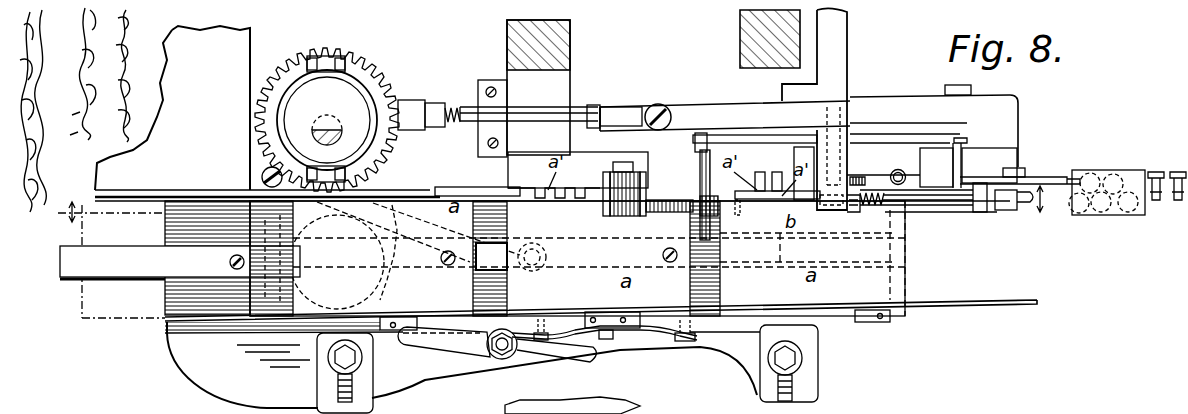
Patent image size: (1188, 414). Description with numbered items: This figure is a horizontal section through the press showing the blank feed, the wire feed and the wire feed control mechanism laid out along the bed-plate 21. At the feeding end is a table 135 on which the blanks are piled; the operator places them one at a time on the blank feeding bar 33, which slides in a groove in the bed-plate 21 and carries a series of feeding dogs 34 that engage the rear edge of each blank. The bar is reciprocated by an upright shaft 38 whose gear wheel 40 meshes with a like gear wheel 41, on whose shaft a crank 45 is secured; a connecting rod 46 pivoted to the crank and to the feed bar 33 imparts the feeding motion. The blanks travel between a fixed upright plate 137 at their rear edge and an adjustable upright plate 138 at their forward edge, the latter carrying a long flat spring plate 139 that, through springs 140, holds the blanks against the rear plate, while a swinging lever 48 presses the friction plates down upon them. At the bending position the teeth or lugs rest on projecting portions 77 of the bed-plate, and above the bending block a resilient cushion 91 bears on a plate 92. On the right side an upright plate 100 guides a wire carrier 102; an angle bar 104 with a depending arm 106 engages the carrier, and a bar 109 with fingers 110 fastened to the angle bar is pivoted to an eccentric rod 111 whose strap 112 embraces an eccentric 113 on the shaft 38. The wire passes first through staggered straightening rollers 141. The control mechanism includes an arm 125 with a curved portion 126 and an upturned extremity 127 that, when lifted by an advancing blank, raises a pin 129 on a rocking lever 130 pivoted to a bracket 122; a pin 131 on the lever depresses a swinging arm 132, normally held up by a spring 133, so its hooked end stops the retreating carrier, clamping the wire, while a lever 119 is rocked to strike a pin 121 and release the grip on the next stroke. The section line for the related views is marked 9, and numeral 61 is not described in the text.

The type bars / plate 9 is at (593, 244).
The bed-plate 21 is at (172, 360).
The blank feeding bar 33 is at (180, 258).
The feeding dogs 34 is at (284, 252).
The upright shaft 38 is at (338, 135).
The gear wheel 40 is at (286, 70).
The gear wheel 41 is at (387, 210).
The crank 45 is at (264, 175).
The connecting rod 46 is at (366, 257).
The swinging lever 48 is at (452, 345).
The part 61 is at (697, 407).
The projecting portions 77 is at (762, 172).
The resilient cushion 91 is at (618, 406).
The plate 92 is at (661, 402).
The upright plate 100 is at (1045, 172).
The carrier 102 is at (1024, 203).
The angle bar 104 is at (938, 162).
The arm 106 is at (892, 206).
The bar 109 is at (700, 112).
The fingers 110 is at (1018, 118).
The eccentric rod 111 is at (555, 112).
The strap 112 is at (345, 88).
The eccentric 113 is at (324, 97).
The lever 119 is at (1042, 207).
The pin 121 is at (1000, 210).
The bracket 122 is at (838, 85).
The arm 125 is at (618, 214).
The curved portion 126 is at (668, 213).
The extremity 127 is at (725, 205).
The pin 129 is at (700, 160).
The rocking lever 130 is at (770, 136).
The pin 131 is at (960, 167).
The swinging arm 132 is at (1022, 166).
The spring 133 is at (898, 168).
The table 135 is at (172, 108).
The fixed upright plate 137 is at (468, 182).
The adjustable upright plate 138 is at (562, 322).
The spring plate 139 is at (928, 308).
The springs 140 is at (541, 341).
The straightening rollers 141 is at (1176, 205).